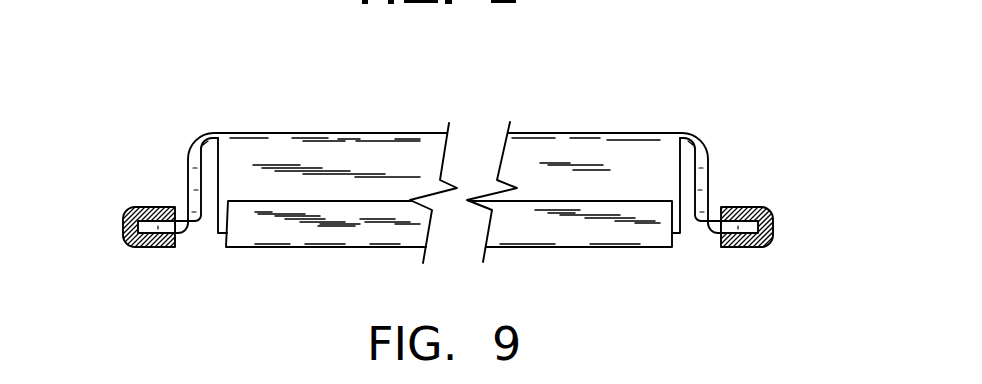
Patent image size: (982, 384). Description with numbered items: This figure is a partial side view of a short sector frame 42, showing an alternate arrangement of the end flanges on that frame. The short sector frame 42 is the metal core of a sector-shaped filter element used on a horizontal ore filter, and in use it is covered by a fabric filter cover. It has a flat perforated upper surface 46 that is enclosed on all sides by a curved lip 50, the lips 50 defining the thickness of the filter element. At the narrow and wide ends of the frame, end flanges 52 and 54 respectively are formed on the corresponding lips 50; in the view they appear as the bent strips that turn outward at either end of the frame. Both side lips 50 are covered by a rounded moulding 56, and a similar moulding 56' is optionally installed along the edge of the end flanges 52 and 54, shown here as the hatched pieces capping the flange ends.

The short sector frame 42 is at (708, 53).
The flat perforated upper surface 46 is at (563, 131).
The curved lip 50 is at (187, 178).
The end flange 52 is at (185, 235).
The end flange 54 is at (717, 233).
The rounded moulding 56 is at (449, 261).
The moulding 56' is at (428, 211).